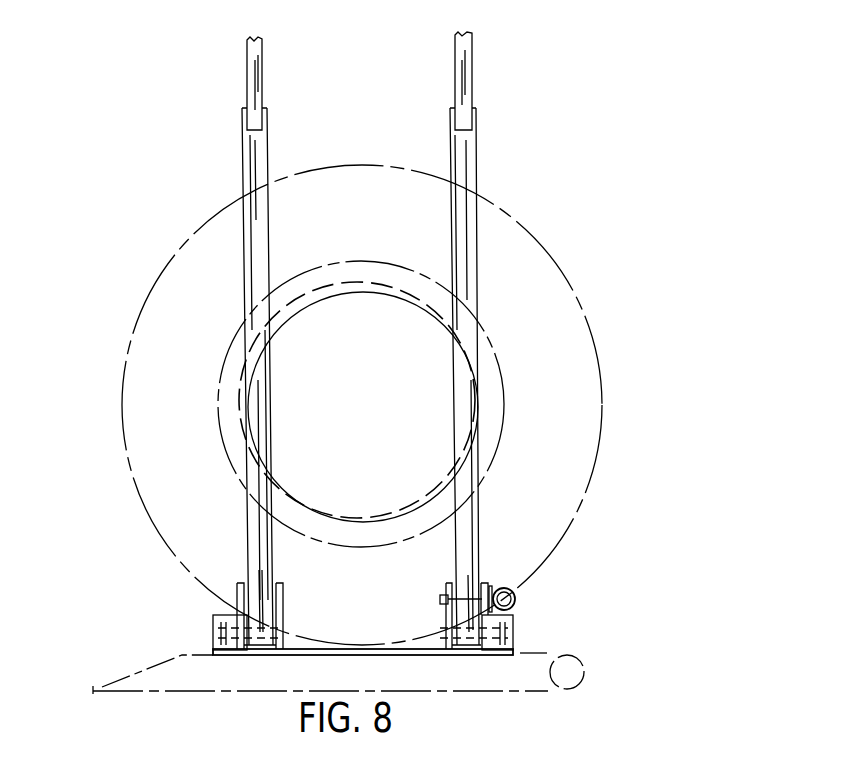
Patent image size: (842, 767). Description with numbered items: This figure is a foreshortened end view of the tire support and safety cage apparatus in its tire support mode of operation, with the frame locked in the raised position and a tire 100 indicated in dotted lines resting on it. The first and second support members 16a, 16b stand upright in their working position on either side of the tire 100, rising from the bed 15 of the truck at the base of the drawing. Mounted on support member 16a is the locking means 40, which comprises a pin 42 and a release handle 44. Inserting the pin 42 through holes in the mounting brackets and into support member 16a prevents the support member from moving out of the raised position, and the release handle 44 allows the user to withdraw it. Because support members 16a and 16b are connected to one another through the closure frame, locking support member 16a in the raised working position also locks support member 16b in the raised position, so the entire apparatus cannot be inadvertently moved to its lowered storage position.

The tire 100 is at (565, 362).
The first support member 16a is at (468, 151).
The second support member 16b is at (250, 152).
The bed 15 is at (202, 653).
The locking means 40 is at (507, 573).
The pin 42 is at (440, 599).
The release handle 44 is at (515, 607).